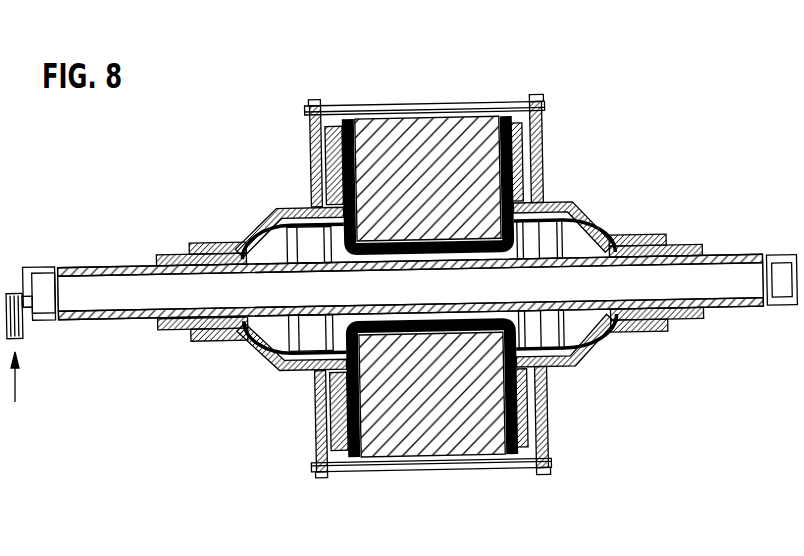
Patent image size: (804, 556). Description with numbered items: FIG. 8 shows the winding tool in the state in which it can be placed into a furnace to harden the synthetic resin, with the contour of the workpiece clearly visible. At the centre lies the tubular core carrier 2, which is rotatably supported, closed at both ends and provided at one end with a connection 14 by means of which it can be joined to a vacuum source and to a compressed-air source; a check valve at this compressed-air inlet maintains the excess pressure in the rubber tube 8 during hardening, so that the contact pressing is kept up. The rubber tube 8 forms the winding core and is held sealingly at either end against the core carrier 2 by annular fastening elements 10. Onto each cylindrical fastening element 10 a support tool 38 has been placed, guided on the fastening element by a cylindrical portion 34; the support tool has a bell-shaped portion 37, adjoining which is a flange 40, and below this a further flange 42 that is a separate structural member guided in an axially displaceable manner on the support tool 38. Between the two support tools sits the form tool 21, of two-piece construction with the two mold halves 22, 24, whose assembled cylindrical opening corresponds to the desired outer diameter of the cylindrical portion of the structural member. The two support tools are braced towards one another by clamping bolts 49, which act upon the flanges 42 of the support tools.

The core carrier 2 is at (724, 305).
The rubber tube 8 is at (256, 347).
The annular fastening element 10 is at (170, 252).
The connection 14 is at (22, 333).
The form tool 21 is at (428, 100).
The mold half 22 is at (318, 413).
The mold half 24 is at (380, 128).
The cylindrical portion 34 is at (646, 236).
The bell-shaped portion 37 is at (606, 347).
The support tool 38 is at (254, 214).
The flange 40 is at (544, 140).
The further flange 42 is at (341, 455).
The clamping bolt 49 is at (475, 105).